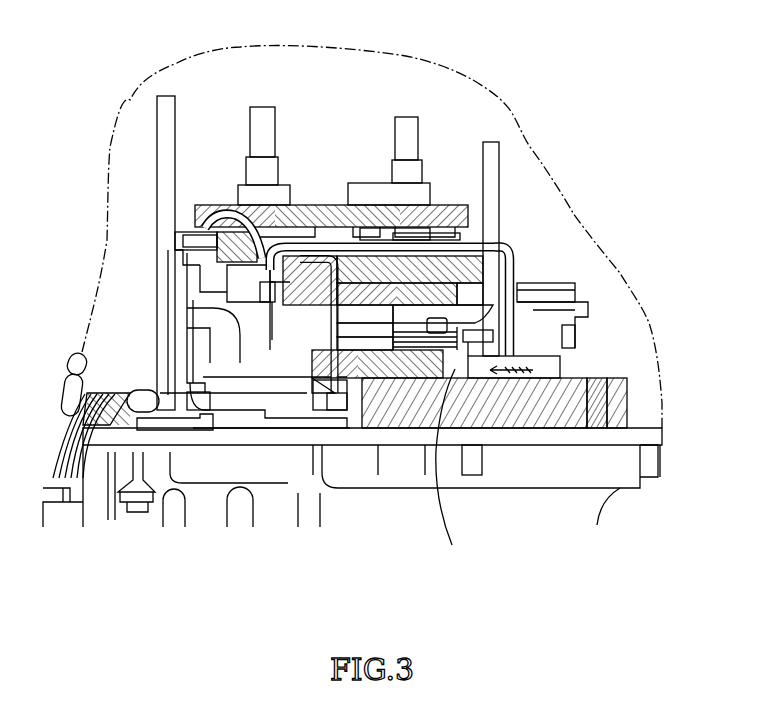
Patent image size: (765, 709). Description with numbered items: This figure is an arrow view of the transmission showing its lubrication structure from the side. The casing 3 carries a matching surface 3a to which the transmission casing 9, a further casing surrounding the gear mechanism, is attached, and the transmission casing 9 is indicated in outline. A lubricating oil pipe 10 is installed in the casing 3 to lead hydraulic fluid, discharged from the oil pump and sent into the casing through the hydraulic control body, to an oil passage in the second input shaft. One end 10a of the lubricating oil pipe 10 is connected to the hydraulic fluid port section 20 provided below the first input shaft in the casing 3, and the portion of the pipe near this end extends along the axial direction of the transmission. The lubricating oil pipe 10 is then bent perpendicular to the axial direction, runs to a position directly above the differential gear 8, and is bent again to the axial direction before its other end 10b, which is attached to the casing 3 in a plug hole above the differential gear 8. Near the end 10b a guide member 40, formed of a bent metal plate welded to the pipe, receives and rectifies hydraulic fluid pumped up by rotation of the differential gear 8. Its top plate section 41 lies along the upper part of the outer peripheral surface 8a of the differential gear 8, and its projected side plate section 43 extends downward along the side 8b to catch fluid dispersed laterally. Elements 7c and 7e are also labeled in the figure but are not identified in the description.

The casing 3 is at (658, 464).
The matching surface 3a is at (660, 416).
The frame portion 7c is at (458, 468).
The support post 7e is at (500, 163).
The differential gear 8 is at (595, 376).
The outer peripheral surface 8a is at (623, 389).
The side 8b is at (590, 376).
The transmission casing 9 is at (505, 95).
The lubricating oil pipe 10 is at (512, 245).
The one end 10a is at (272, 220).
The another end 10b is at (518, 320).
The hydraulic fluid port section 20 is at (185, 243).
The guide member 40 is at (558, 354).
The top plate section 41 is at (576, 326).
The side plate section 43 is at (530, 315).